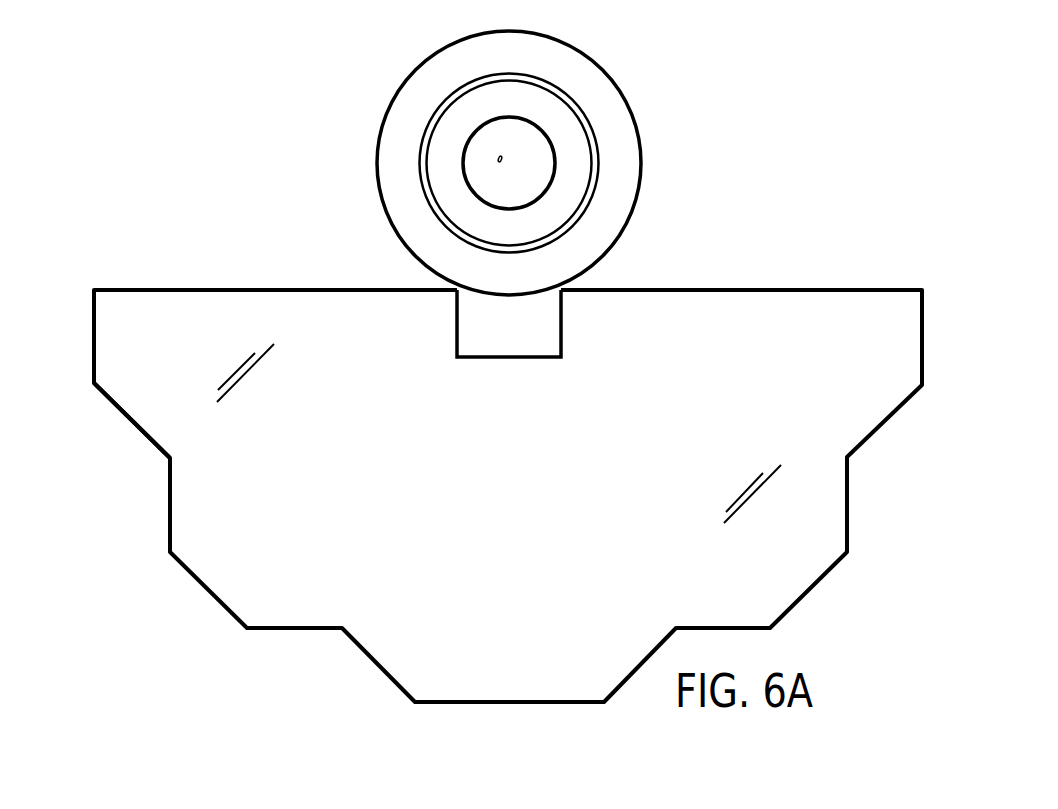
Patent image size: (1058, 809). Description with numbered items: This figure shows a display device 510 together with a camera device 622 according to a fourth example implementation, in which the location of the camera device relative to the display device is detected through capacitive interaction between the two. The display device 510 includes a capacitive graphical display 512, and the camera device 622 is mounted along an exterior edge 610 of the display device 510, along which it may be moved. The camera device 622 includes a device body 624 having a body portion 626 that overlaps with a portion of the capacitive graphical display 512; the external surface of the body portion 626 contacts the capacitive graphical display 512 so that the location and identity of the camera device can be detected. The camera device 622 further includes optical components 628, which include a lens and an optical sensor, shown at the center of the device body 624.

The display device 510 is at (94, 326).
The capacitive graphical display 512 is at (143, 413).
The exterior edge 610 is at (773, 288).
The camera device 622 is at (623, 102).
The device body 624 is at (621, 167).
The body portion 626 is at (545, 321).
The optical components 628 is at (482, 145).